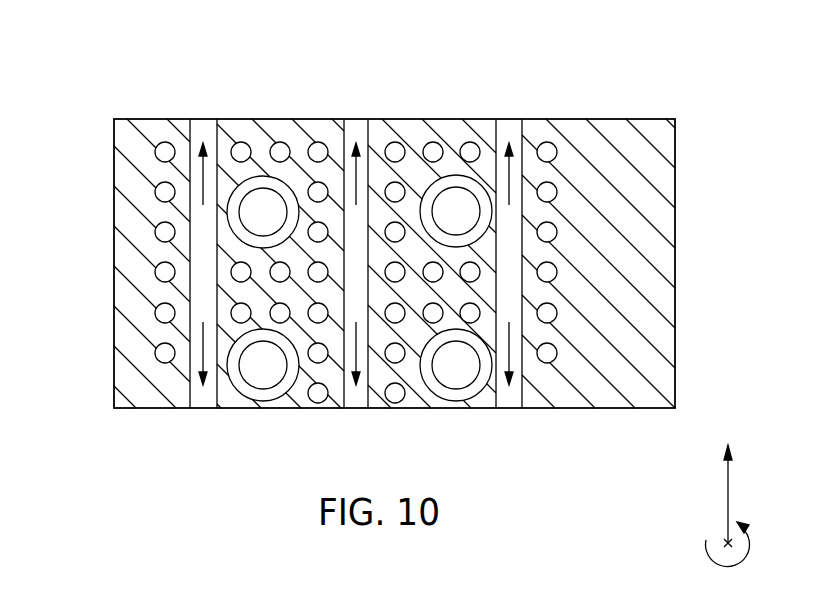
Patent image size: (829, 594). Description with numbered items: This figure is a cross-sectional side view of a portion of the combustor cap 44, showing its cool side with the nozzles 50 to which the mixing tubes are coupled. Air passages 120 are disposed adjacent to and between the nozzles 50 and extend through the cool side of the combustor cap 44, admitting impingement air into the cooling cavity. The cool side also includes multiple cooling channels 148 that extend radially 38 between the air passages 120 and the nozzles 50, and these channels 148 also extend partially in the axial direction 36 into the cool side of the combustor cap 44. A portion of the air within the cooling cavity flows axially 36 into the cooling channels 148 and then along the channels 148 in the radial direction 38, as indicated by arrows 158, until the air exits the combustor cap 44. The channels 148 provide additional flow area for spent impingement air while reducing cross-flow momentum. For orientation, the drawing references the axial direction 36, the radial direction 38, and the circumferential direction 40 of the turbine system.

The combustor cap 44 is at (116, 56).
The nozzles 50 is at (263, 176).
The air passages 120 is at (165, 353).
The cooling channels 148 is at (203, 397).
The arrows 158 is at (200, 177).
The axial axis or direction 36 is at (722, 542).
The radial axis or direction 38 is at (728, 498).
The circumferential axis or direction 40 is at (747, 558).